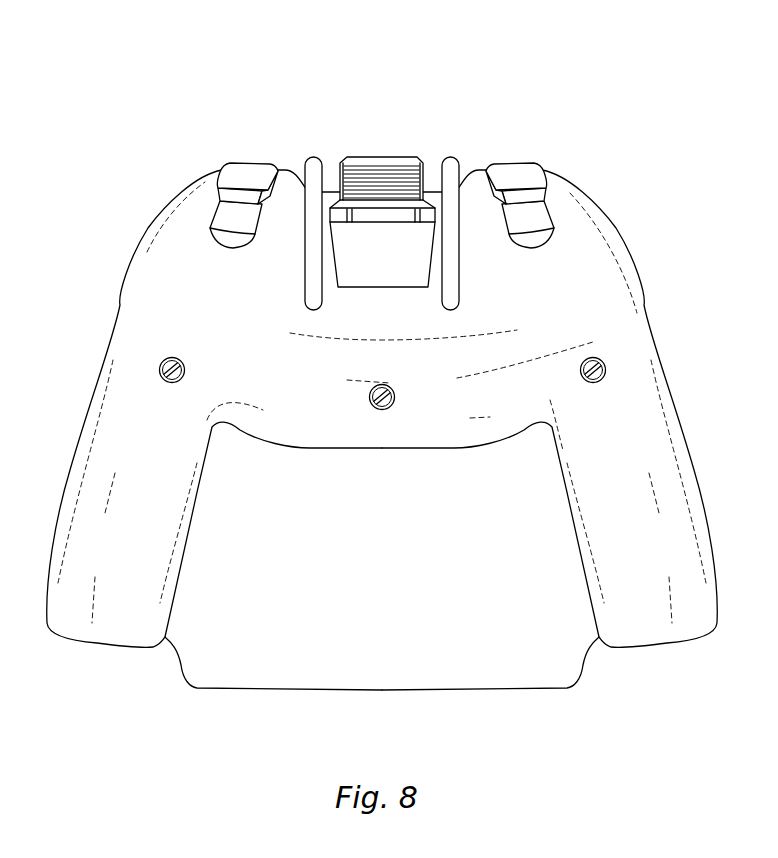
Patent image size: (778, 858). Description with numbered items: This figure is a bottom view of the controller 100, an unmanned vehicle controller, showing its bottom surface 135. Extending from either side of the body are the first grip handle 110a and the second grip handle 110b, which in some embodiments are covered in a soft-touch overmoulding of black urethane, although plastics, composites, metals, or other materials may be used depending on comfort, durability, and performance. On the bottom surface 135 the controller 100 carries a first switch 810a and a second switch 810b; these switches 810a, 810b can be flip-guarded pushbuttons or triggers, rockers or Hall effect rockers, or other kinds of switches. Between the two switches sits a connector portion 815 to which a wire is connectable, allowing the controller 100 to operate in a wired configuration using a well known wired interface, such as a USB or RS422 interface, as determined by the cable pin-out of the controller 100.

The controller 100 is at (571, 66).
The first grip handle 110a is at (677, 417).
The second grip handle 110b is at (83, 430).
The bottom surface 135 is at (583, 197).
The first switch 810a is at (243, 173).
The second switch 810b is at (515, 168).
The connector portion 815 is at (383, 173).